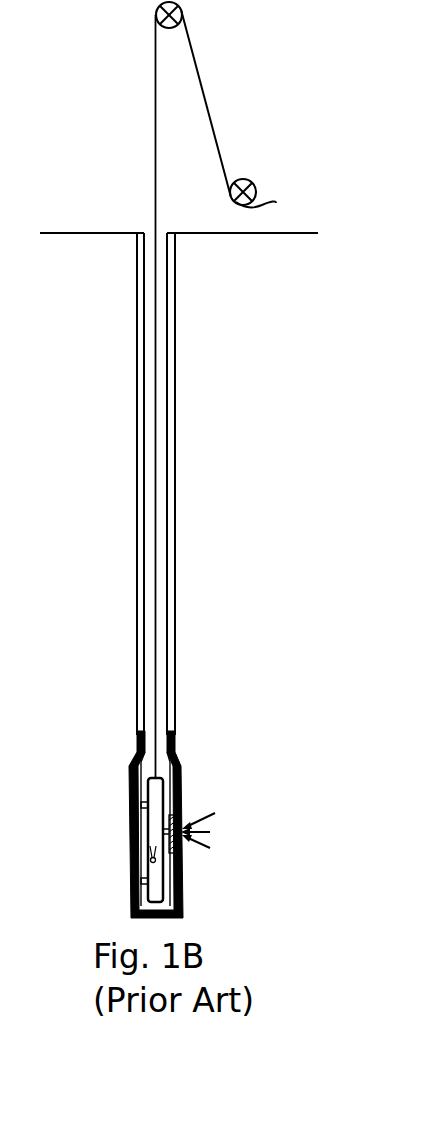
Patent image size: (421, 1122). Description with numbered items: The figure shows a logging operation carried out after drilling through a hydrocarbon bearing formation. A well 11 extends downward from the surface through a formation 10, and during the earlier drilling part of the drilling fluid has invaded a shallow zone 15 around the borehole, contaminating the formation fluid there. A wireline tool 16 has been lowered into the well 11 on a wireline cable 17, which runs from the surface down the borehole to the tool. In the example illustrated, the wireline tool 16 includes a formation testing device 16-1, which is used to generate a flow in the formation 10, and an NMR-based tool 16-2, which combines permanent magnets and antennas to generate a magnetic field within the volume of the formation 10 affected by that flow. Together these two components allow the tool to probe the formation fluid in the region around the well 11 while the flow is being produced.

The formation 10 is at (264, 694).
The well 11 is at (177, 545).
The wireline cable 17 is at (154, 150).
The wireline tool 16 is at (96, 788).
The shallow zone 15 is at (130, 861).
The formation testing device 16-1 is at (156, 860).
The NMR-based tool 16-2 is at (188, 823).